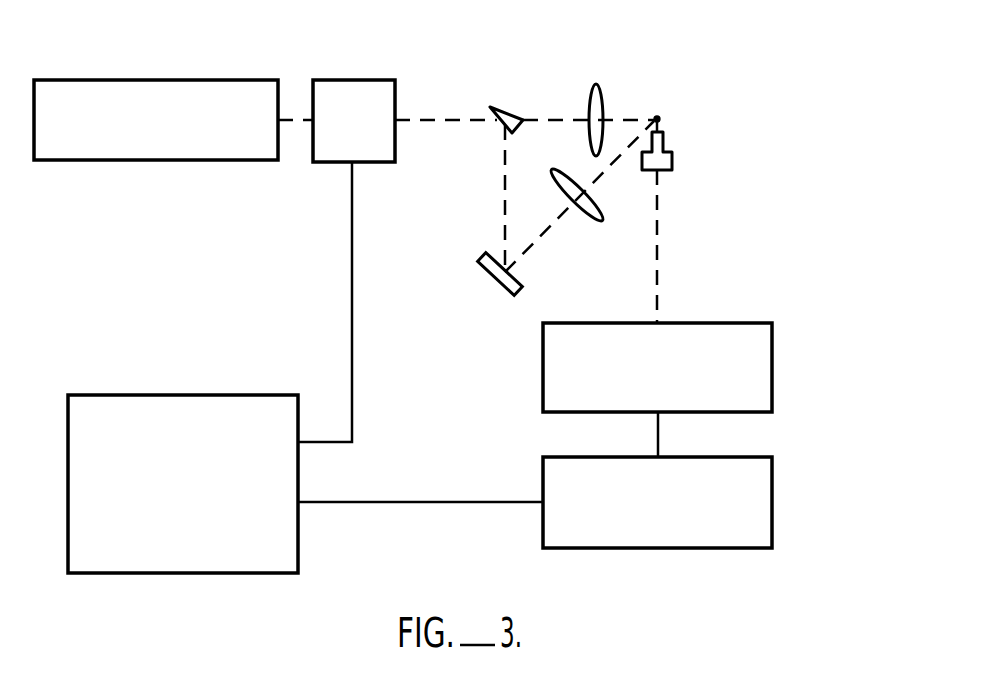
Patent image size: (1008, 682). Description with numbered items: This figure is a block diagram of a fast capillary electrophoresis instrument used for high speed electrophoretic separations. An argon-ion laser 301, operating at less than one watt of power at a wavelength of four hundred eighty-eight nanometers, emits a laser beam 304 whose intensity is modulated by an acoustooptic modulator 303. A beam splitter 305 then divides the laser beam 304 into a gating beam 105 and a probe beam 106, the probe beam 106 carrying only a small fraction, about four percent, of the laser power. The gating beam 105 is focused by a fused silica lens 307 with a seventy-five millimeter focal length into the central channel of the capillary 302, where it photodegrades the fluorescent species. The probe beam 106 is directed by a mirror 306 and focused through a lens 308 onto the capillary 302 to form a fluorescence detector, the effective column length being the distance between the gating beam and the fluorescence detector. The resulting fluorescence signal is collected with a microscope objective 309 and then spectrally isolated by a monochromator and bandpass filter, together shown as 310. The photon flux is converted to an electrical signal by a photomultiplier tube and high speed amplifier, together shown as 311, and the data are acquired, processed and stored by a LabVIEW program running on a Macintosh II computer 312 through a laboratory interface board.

The argon-ion laser 301 is at (243, 142).
The acoustooptic modulator 303 is at (380, 144).
The laser beam 304 is at (473, 122).
The beam splitter 305 is at (507, 110).
The gating beam 105 is at (538, 120).
The fused silica lens 307 is at (600, 87).
The capillary 302 is at (660, 119).
The microscope objective 309 is at (672, 157).
The probe beam 106 is at (505, 226).
The mirror 306 is at (505, 295).
The lens 308 is at (584, 217).
The monochromator and bandpass filter 310 is at (772, 372).
The photomultiplier tube and high speed amplifier 311 is at (772, 498).
The computer 312 is at (205, 530).